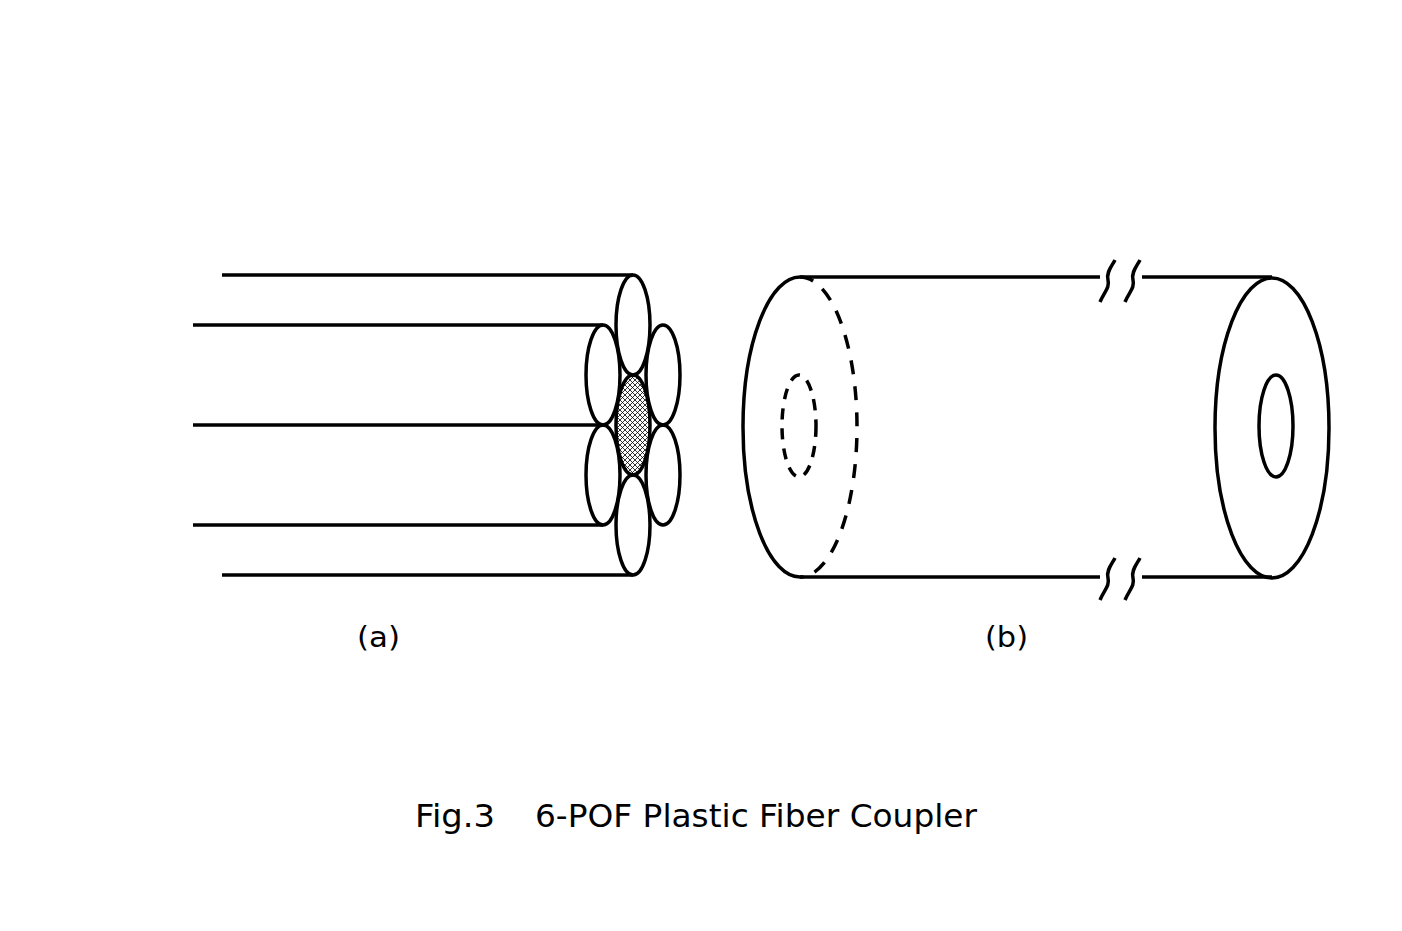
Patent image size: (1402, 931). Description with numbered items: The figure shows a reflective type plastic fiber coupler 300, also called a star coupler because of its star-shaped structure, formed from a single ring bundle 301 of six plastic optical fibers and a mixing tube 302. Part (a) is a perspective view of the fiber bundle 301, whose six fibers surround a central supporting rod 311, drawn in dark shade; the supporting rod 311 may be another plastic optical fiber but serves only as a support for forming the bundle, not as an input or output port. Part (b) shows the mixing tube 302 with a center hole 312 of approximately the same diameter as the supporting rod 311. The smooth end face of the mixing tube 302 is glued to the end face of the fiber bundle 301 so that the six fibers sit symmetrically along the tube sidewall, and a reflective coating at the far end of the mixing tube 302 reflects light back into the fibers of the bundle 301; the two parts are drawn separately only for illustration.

The plastic fiber coupler 300 is at (804, 117).
The single ring bundle 301 is at (590, 273).
The supporting rod 311 is at (637, 410).
The mixing tube 302 is at (1050, 277).
The center hole 312 is at (1276, 418).